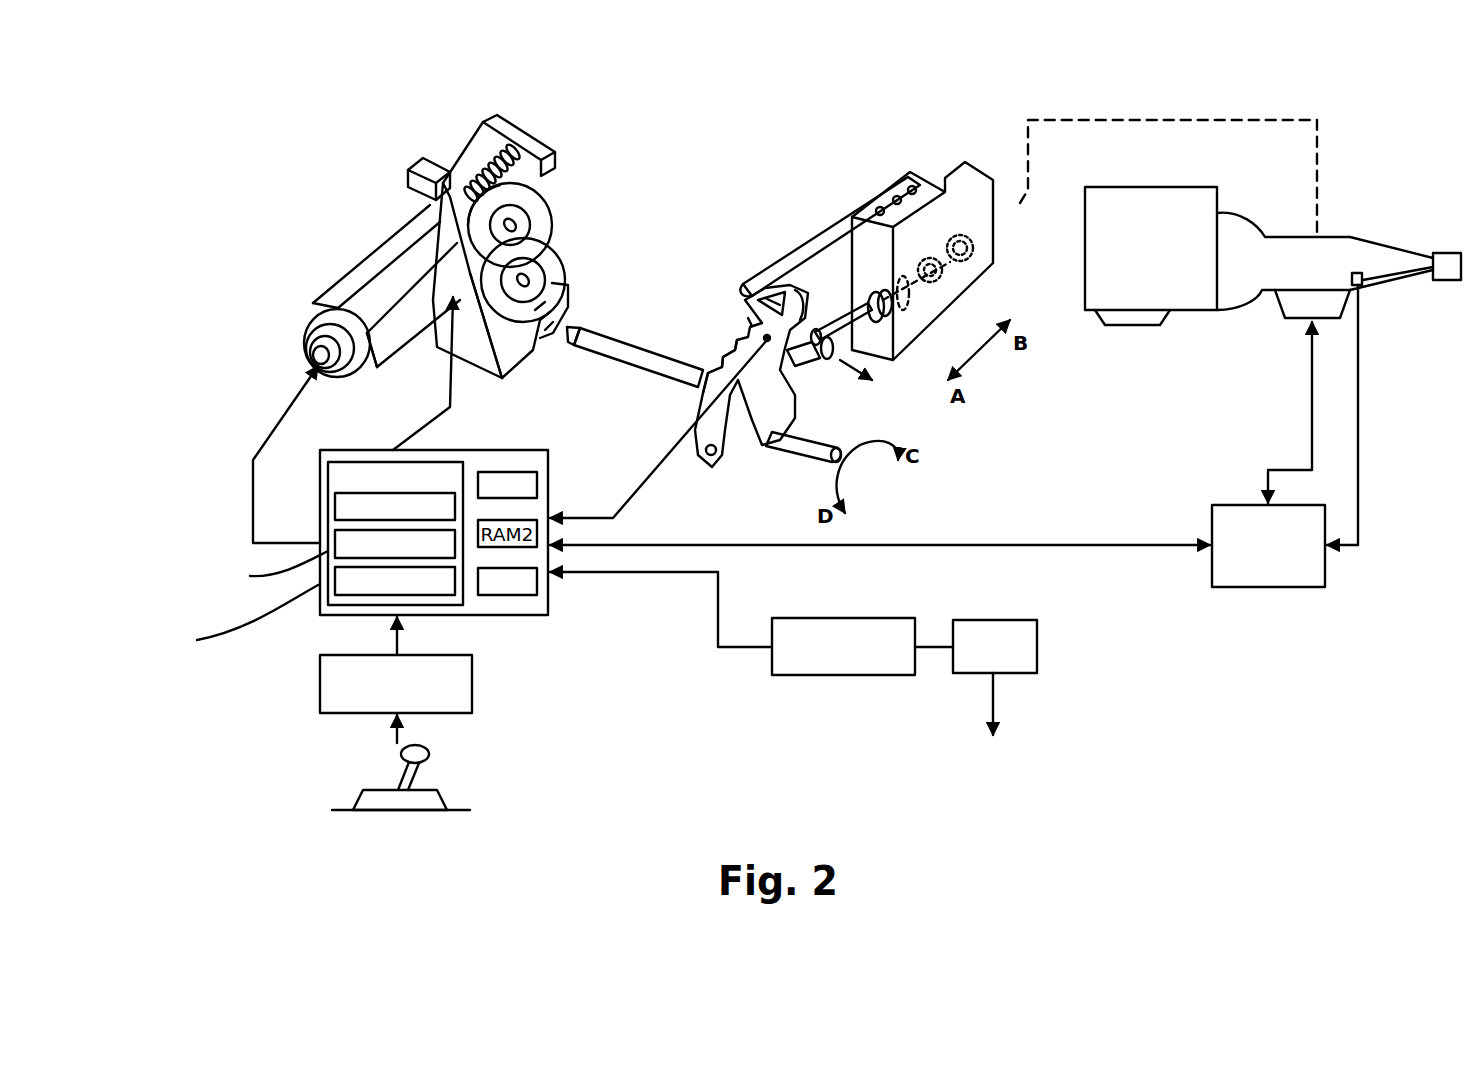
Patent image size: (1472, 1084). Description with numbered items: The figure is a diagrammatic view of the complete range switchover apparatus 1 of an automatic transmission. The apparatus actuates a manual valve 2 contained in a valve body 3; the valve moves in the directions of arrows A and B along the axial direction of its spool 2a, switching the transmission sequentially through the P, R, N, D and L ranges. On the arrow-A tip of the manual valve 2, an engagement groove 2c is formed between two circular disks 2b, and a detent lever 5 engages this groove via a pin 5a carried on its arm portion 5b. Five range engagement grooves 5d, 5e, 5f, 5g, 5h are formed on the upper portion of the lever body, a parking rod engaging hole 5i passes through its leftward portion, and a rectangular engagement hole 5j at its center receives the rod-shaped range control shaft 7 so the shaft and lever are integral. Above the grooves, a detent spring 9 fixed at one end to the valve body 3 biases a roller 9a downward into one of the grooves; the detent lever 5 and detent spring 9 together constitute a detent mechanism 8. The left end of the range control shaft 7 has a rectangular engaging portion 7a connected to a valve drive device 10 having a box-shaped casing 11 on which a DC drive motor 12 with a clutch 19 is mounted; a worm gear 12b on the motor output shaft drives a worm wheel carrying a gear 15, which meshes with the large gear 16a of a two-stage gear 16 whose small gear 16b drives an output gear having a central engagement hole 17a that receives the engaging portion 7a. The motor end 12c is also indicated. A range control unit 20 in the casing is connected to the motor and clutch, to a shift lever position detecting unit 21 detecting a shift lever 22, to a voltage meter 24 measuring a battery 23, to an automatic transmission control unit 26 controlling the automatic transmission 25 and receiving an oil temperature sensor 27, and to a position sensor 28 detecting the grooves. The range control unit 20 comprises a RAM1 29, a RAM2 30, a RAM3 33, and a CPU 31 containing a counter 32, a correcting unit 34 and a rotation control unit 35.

The range switchover apparatus 1 is at (705, 145).
The manual valve 2 is at (975, 265).
The spool 2a is at (895, 355).
The circular disks 2b is at (858, 348).
The engagement groove 2c is at (818, 333).
The valve body 3 is at (978, 158).
The detent lever 5 is at (720, 318).
The pin 5a is at (828, 360).
The arm portion 5b is at (805, 398).
The range engagement groove 5d is at (792, 285).
The range engagement groove 5e is at (755, 300).
The range engagement groove 5f is at (748, 318).
The range engagement groove 5g is at (720, 330).
The range engagement groove 5h is at (705, 365).
The parking rod engaging hole 5i is at (712, 468).
The engagement hole 5j is at (790, 460).
The range control shaft 7 is at (650, 383).
The engaging portion 7a is at (573, 357).
The detent mechanism 8 is at (815, 195).
The detent spring 9 is at (840, 215).
The roller 9a is at (758, 285).
The valve drive device 10 is at (528, 120).
The casing 11 is at (530, 217).
The drive motor 12 is at (362, 243).
The worm gear 12b is at (490, 163).
The motor housing 12c is at (383, 350).
The gear 15 is at (523, 197).
The two-stage gear 16 is at (567, 258).
The large gear 16a is at (553, 233).
The small gear 16b is at (480, 357).
The engagement hole 17a is at (563, 330).
The clutch 19 is at (405, 210).
The range control unit 20 is at (313, 603).
The shift lever position detecting unit 21 is at (465, 688).
The shift lever 22 is at (423, 773).
The battery 23 is at (1000, 643).
The voltage meter 24 is at (852, 653).
The automatic transmission 25 is at (1233, 213).
The automatic transmission control unit 26 is at (1270, 587).
The oil temperature sensor 27 is at (1370, 282).
The position sensor 28 is at (800, 292).
The RAM1 29 is at (530, 595).
The RAM2 30 is at (550, 494).
The CPU 31 is at (345, 460).
The counter 32 is at (332, 503).
The RAM3 33 is at (540, 478).
The correcting unit 34 is at (236, 643).
The rotation control unit 35 is at (228, 560).